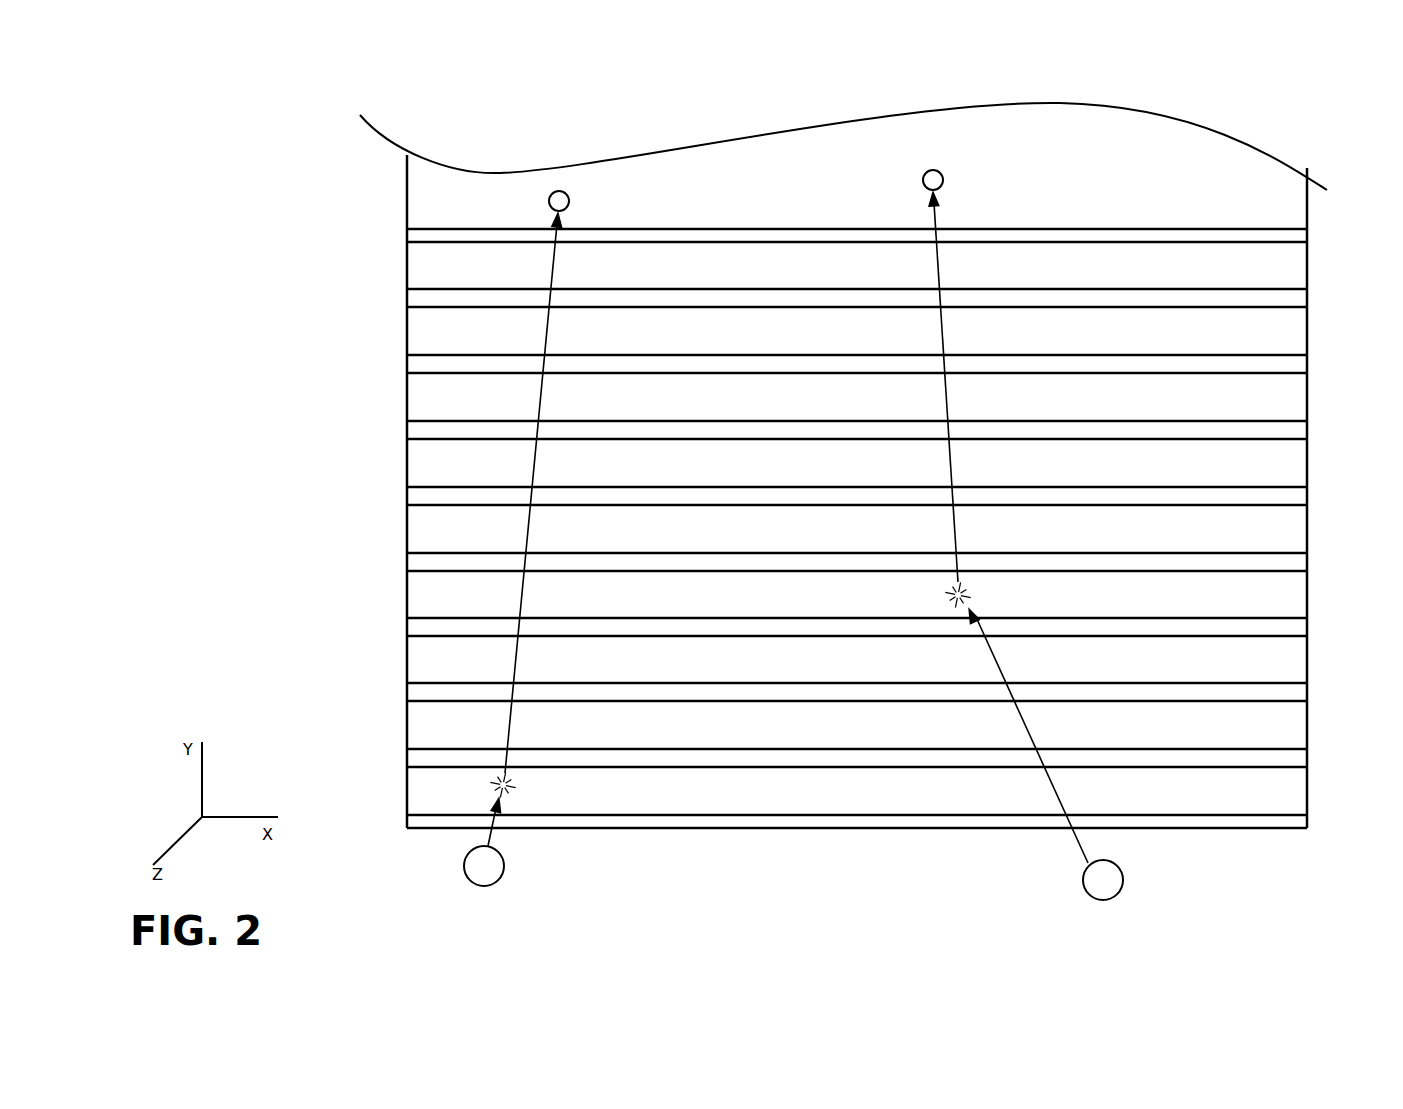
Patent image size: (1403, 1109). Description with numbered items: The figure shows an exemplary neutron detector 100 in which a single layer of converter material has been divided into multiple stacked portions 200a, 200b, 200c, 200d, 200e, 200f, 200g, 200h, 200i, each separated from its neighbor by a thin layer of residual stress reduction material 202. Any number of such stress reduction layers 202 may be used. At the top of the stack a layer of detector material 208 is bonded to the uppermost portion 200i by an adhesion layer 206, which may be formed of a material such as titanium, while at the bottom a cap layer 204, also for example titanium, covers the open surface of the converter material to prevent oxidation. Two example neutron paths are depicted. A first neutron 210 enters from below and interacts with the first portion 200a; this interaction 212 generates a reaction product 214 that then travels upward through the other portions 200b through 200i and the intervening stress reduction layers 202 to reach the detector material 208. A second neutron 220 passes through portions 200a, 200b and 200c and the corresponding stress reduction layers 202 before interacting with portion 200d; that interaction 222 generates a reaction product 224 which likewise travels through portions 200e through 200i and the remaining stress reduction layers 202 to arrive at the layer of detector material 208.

The neutron detector 100 is at (202, 166).
The first portion of the layer of converter material 200a is at (407, 790).
The portion of the layer of converter material 200b is at (407, 724).
The portion of the layer of converter material 200c is at (407, 658).
The portion of the layer of converter material 200d is at (407, 593).
The portion of the layer of converter material 200e is at (407, 528).
The portion of the layer of converter material 200f is at (407, 462).
The portion of the layer of converter material 200g is at (407, 396).
The portion of the layer of converter material 200h is at (407, 330).
The portion of the layer of converter material 200i is at (407, 264).
The layer of residual stress reduction material 202 is at (1307, 298).
The cap layer 204 is at (1307, 822).
The adhesion layer 206 is at (1307, 236).
The layer of detector material 208 is at (407, 205).
The first neutron 210 is at (522, 873).
The interaction between the first neutron and the first portion 212 is at (480, 790).
The reaction product 214 is at (585, 202).
The second neutron 220 is at (1140, 889).
The interaction between the second neutron and portion 200d 222 is at (935, 599).
The reaction product 224 is at (958, 182).